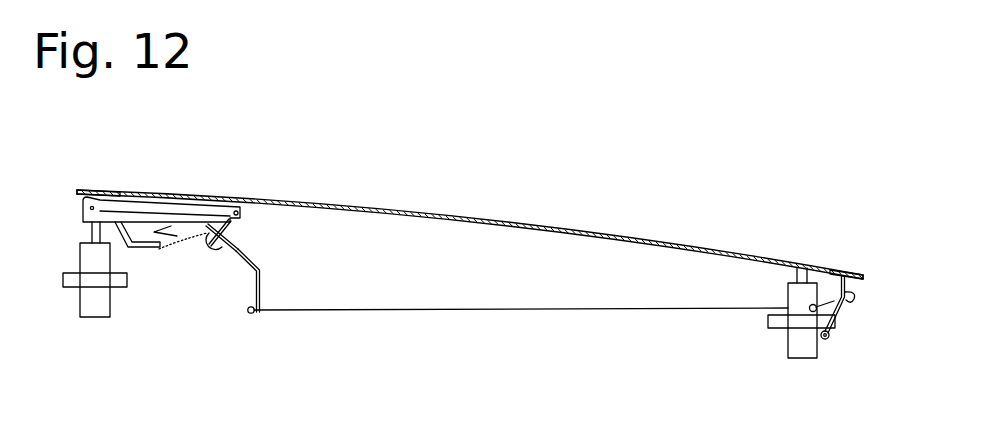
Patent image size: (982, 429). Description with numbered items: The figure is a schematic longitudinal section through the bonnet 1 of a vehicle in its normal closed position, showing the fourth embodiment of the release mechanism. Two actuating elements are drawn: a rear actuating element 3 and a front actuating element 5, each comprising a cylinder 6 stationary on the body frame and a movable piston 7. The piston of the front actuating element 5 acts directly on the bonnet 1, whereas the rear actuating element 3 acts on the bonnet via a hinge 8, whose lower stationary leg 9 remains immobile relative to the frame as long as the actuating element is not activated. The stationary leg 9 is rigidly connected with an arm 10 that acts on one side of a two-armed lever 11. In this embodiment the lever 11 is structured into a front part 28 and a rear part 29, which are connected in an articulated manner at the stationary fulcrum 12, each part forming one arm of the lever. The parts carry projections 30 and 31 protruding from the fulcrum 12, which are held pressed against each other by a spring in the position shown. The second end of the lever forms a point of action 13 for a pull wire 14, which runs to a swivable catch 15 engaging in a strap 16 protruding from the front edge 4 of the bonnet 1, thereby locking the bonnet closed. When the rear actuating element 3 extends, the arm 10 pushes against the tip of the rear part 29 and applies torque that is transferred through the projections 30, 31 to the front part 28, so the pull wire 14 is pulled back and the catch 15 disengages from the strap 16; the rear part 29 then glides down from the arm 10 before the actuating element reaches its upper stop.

The bonnet 1 is at (490, 218).
The rear actuating element 3 is at (77, 302).
The front edge 4 is at (857, 270).
The front actuating element 5 is at (778, 340).
The cylinder 6 is at (98, 307).
The piston 7 is at (91, 233).
The hinge 8 is at (97, 183).
The stationary leg 9 is at (182, 215).
The arm 10 is at (135, 247).
The two-armed lever 11 is at (267, 251).
The fulcrum 12 is at (207, 244).
The point of action 13 is at (263, 314).
The pull wire 14 is at (508, 312).
The catch 15 is at (837, 307).
The strap 16 is at (840, 273).
The front part 28 is at (262, 280).
The rear part 29 is at (182, 231).
The projection 30 is at (253, 220).
The projection 31 is at (233, 217).